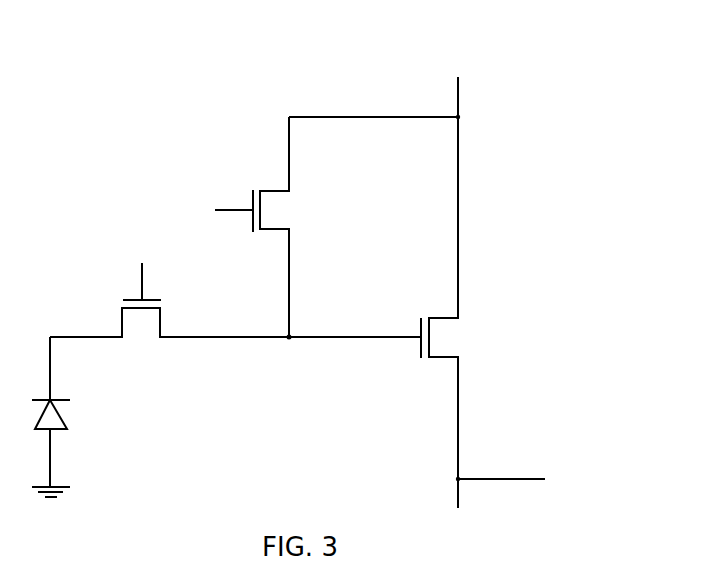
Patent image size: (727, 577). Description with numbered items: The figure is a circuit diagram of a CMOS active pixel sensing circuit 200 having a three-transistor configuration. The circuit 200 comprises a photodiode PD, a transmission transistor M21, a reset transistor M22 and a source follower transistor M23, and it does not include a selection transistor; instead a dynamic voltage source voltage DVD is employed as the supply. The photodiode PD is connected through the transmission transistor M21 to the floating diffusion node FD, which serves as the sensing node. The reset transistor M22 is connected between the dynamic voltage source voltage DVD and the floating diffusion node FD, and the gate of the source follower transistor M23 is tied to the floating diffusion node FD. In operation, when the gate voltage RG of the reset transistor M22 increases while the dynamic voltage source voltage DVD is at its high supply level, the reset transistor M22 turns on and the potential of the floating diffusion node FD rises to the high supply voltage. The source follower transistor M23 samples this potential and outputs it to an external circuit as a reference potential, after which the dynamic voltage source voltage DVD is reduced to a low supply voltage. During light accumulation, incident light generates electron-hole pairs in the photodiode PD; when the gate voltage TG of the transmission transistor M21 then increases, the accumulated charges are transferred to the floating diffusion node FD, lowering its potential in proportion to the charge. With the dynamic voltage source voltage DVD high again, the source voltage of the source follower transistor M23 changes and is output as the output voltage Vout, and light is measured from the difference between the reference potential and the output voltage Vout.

The CMOS active pixel sensing circuit 200 is at (300, 42).
The transmission transistor M21 is at (122, 322).
The reset transistor M22 is at (272, 190).
The source follower transistor M23 is at (440, 318).
The floating diffusion node FD is at (62, 412).
The photodiode PD is at (289, 340).
The gate voltage of the transmission transistor TG is at (140, 269).
The gate voltage of the reset transistor RG is at (221, 210).
The dynamic voltage source voltage DVD is at (457, 84).
The output voltage Vout is at (527, 480).